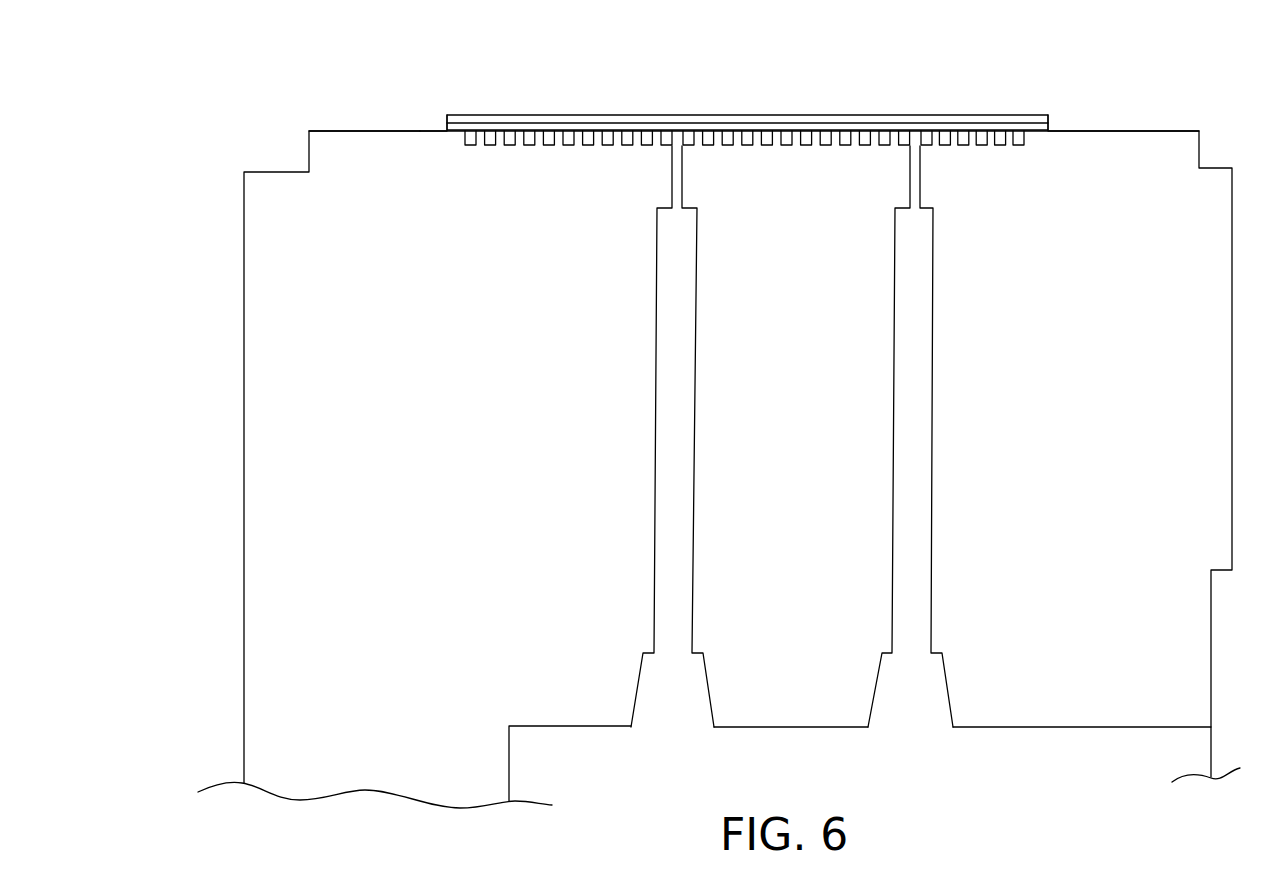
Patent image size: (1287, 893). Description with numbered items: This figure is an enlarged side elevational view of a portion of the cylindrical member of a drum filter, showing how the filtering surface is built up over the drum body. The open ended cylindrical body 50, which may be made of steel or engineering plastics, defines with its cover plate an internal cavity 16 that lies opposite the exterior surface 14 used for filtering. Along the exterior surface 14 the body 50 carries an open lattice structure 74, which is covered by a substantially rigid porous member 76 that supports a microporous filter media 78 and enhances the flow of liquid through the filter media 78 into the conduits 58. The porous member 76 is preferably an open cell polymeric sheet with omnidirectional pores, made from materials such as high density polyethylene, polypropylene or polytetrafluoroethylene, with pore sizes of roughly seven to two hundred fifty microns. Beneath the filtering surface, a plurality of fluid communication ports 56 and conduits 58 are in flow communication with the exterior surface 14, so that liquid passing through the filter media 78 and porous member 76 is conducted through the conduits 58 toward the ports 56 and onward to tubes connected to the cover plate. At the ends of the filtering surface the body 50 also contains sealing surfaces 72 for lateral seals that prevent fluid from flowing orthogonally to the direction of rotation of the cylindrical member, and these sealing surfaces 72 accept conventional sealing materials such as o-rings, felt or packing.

The exterior surface 14 is at (1088, 124).
The internal cavity 16 is at (1040, 807).
The cylindrical body 50 is at (268, 480).
The fluid communication ports 56 is at (896, 720).
The conduits 58 is at (657, 455).
The sealing surfaces 72 is at (468, 109).
The open lattice structure 74 is at (1013, 148).
The porous member 76 is at (447, 129).
The microporous filter media 78 is at (784, 109).